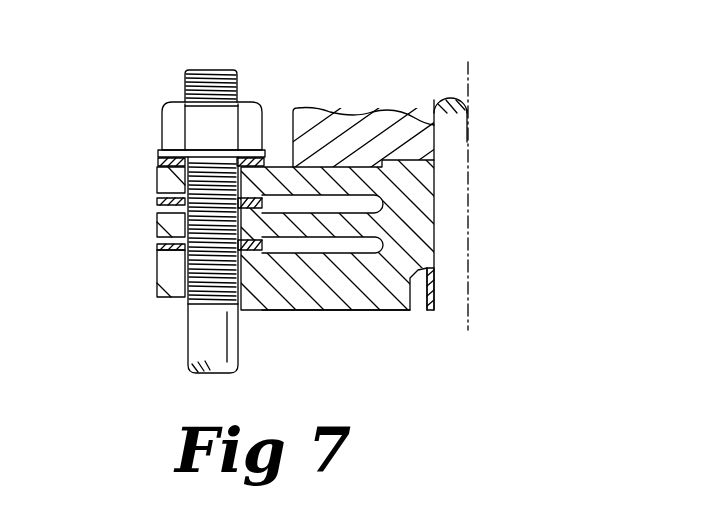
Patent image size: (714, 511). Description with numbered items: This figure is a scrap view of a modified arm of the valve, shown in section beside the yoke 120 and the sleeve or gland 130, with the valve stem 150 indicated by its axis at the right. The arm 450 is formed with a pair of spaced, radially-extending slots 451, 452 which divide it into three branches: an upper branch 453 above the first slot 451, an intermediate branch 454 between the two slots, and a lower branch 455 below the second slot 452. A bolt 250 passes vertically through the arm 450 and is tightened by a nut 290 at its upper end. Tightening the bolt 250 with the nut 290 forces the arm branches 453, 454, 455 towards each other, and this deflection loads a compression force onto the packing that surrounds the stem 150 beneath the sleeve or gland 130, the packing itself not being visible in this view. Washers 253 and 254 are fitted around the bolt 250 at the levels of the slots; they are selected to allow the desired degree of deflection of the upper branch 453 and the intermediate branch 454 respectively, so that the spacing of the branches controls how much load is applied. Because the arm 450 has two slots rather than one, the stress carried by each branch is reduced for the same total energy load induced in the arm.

The yoke 120 is at (323, 127).
The sleeve or gland 130 is at (420, 290).
The valve stem 150 is at (450, 253).
The bolt 250 is at (185, 82).
The washer 253 is at (162, 202).
The washer 254 is at (163, 245).
The nut 290 is at (162, 122).
The arm 450 is at (347, 222).
The slot 451 is at (278, 205).
The slot 452 is at (275, 250).
The upper branch 453 is at (352, 178).
The intermediate branch 454 is at (318, 225).
The lower branch 455 is at (345, 283).